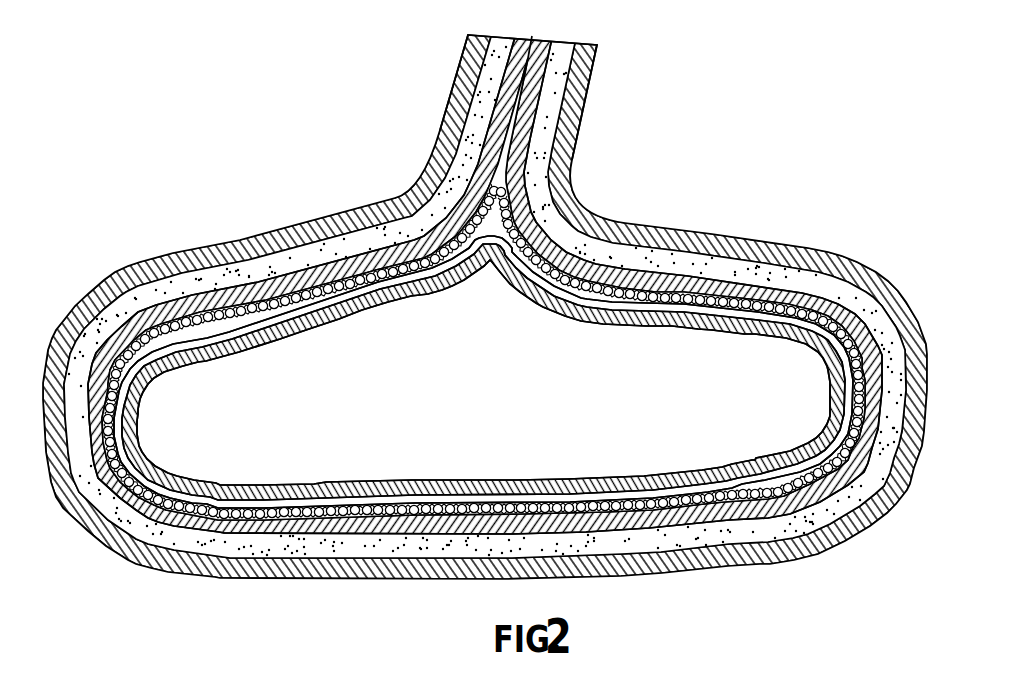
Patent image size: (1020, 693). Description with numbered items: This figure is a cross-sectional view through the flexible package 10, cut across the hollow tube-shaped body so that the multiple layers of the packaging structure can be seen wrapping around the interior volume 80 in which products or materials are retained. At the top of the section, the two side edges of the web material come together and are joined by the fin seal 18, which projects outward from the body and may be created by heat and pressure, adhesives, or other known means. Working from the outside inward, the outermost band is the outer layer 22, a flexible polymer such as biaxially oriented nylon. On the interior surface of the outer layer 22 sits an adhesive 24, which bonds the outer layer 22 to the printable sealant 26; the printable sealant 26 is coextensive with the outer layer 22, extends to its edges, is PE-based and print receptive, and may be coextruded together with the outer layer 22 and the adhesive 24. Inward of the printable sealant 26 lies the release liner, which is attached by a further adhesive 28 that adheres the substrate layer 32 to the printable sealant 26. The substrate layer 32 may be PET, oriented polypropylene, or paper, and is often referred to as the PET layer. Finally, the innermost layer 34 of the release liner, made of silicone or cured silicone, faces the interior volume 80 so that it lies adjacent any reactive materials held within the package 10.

The flexible package 10 is at (786, 90).
The fin seal 18 is at (610, 105).
The outer layer 22 is at (812, 250).
The adhesive 24 is at (835, 285).
The printable sealant 26 is at (858, 323).
The adhesive 28 is at (865, 365).
The substrate layer 32 is at (850, 380).
The innermost layer 34 is at (830, 410).
The interior volume 80 is at (529, 398).